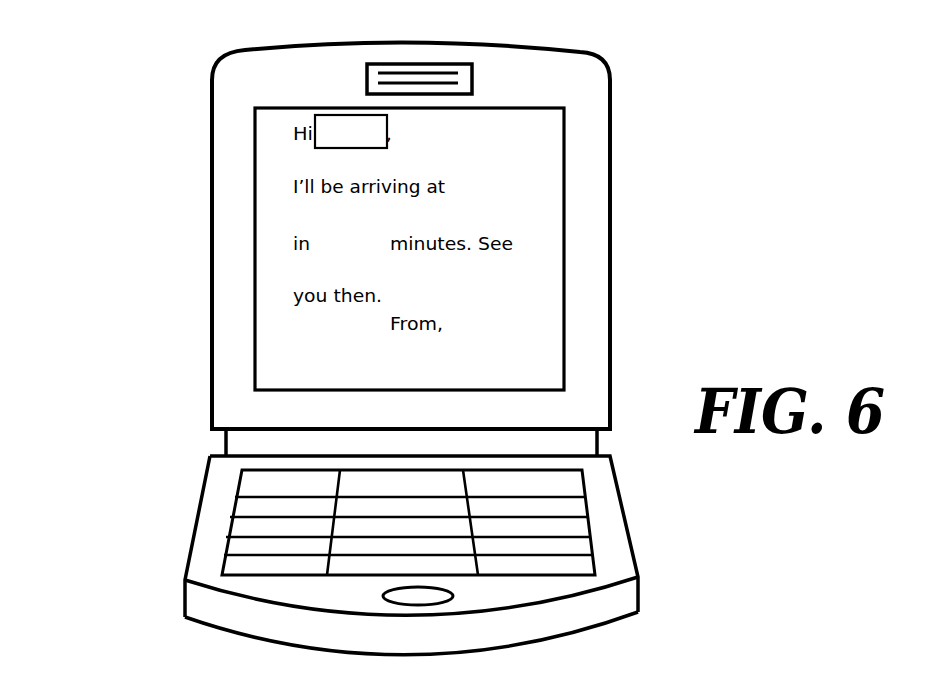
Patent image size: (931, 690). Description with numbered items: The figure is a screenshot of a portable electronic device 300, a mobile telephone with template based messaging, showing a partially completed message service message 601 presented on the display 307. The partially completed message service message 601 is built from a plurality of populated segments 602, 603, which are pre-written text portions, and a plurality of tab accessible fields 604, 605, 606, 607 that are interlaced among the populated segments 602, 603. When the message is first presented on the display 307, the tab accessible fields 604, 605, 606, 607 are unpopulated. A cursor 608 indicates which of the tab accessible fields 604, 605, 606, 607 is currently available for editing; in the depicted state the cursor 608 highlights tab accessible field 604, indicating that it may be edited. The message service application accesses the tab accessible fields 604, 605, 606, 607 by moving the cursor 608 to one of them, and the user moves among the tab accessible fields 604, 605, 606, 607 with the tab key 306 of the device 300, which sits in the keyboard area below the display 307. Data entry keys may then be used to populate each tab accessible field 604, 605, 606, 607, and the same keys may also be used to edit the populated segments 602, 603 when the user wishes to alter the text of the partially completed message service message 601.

The portable electronic device 300 is at (134, 155).
The tab key 306 is at (280, 485).
The display 307 is at (258, 245).
The partially completed message service message 601 is at (533, 207).
The populated segment 602 is at (412, 197).
The populated segment 603 is at (453, 252).
The tab accessible field 604 is at (340, 127).
The tab accessible field 605 is at (507, 180).
The tab accessible field 606 is at (335, 256).
The tab accessible field 607 is at (430, 361).
The cursor 608 is at (380, 149).